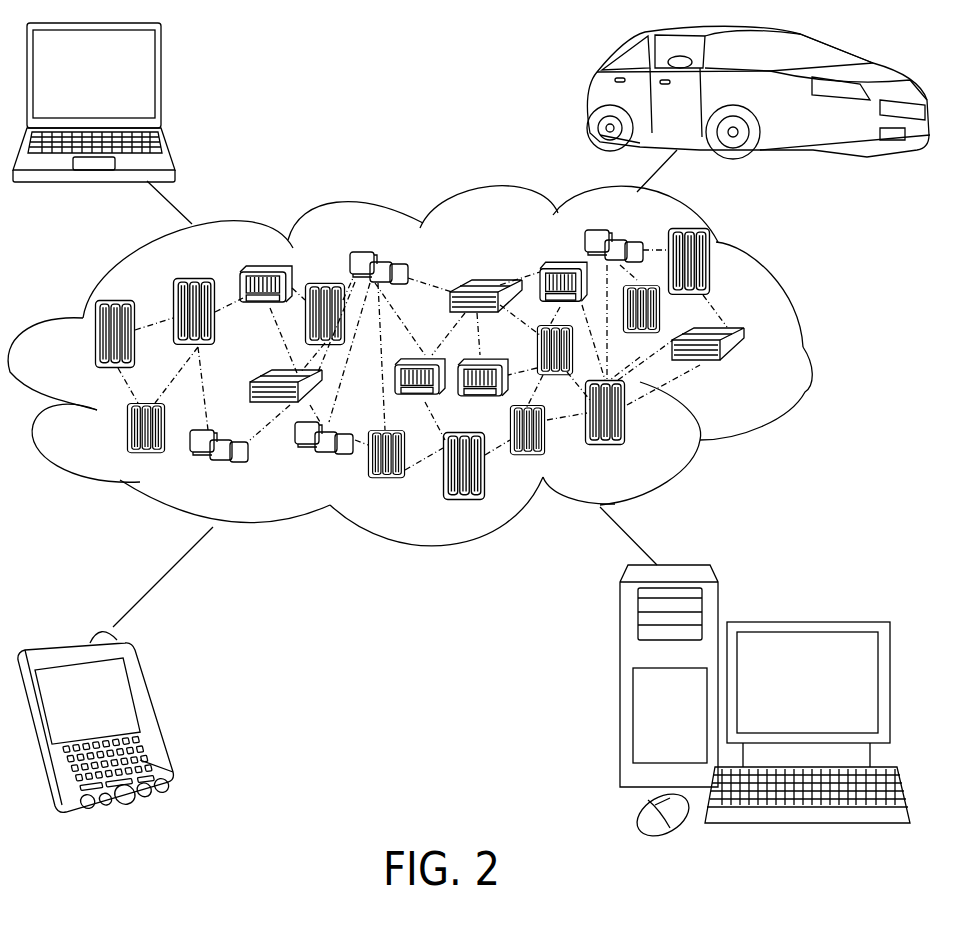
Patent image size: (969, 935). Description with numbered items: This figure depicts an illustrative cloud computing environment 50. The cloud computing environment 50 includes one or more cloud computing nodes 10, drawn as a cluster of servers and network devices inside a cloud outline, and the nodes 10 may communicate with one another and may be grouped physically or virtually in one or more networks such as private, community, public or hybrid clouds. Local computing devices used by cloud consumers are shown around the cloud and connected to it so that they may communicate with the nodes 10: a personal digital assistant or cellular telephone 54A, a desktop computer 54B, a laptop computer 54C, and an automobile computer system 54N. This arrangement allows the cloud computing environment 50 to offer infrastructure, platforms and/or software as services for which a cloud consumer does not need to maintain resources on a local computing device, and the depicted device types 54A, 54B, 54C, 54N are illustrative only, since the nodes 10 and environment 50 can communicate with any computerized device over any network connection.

The cloud computing node 10 is at (748, 372).
The cloud computing environment 50 is at (805, 347).
The personal digital assistant or cellular telephone 54A is at (150, 711).
The desktop computer 54B is at (803, 621).
The laptop computer 54C is at (162, 80).
The automobile computer system 54N is at (590, 98).